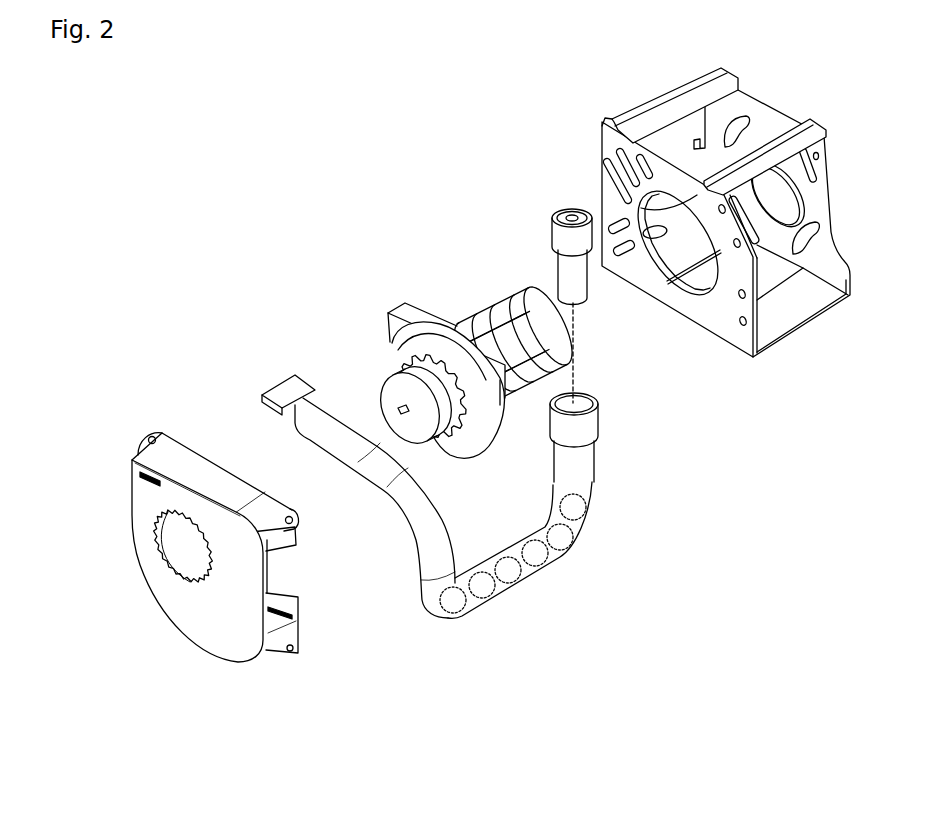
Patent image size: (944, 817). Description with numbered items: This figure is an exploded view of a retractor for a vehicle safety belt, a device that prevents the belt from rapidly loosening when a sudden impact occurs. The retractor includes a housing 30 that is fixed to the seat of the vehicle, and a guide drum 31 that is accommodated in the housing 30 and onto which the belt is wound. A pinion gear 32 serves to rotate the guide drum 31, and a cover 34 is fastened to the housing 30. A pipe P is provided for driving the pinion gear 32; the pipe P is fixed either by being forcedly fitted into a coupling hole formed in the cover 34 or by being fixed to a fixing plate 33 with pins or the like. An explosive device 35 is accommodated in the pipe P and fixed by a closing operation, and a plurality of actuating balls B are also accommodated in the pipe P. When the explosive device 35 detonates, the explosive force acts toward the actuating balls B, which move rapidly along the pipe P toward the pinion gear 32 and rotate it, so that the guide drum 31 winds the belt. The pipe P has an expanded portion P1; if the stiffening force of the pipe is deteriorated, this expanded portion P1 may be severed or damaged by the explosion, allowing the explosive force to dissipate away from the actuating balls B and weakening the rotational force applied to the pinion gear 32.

The housing 30 is at (737, 335).
The guide drum 31 is at (477, 317).
The pinion gear 32 is at (412, 357).
The fixing plate 33 is at (470, 443).
The cover 34 is at (195, 617).
The explosive device 35 is at (562, 238).
The pipe P is at (358, 462).
The expanded portion P1 is at (612, 438).
The actuating ball B is at (517, 577).